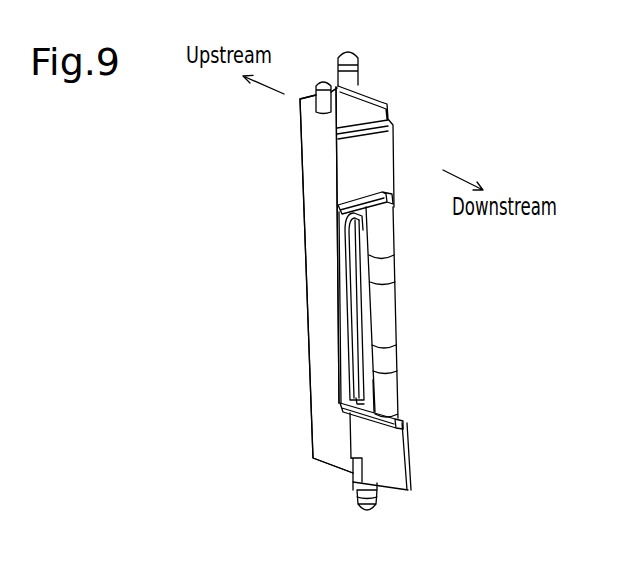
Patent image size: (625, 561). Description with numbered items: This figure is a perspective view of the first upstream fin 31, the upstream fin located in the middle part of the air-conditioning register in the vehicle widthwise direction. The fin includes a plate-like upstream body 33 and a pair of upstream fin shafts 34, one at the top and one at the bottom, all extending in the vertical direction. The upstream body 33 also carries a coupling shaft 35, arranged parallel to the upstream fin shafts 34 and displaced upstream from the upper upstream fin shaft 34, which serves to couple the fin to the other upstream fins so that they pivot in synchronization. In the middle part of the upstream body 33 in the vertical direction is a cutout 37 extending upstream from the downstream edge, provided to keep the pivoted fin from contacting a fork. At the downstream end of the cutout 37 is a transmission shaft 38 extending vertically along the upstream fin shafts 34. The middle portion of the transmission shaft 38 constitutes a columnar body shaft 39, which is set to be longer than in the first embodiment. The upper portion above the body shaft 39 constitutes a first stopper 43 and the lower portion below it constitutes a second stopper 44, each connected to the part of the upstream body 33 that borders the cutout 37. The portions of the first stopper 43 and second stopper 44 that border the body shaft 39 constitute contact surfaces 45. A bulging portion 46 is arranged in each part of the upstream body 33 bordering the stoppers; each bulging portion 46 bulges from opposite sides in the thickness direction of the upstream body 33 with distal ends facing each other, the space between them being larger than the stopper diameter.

The first upstream fin 31 is at (326, 280).
The upstream body 33 is at (319, 265).
The upstream fin shaft 34 is at (357, 74).
The coupling shaft 35 is at (316, 88).
The cutout 37 is at (360, 371).
The transmission shaft 38 is at (362, 299).
The body shaft 39 is at (389, 313).
The first stopper 43 is at (388, 229).
The second stopper 44 is at (390, 395).
The contact surface 45 is at (388, 273).
The bulging portion 46 is at (344, 205).